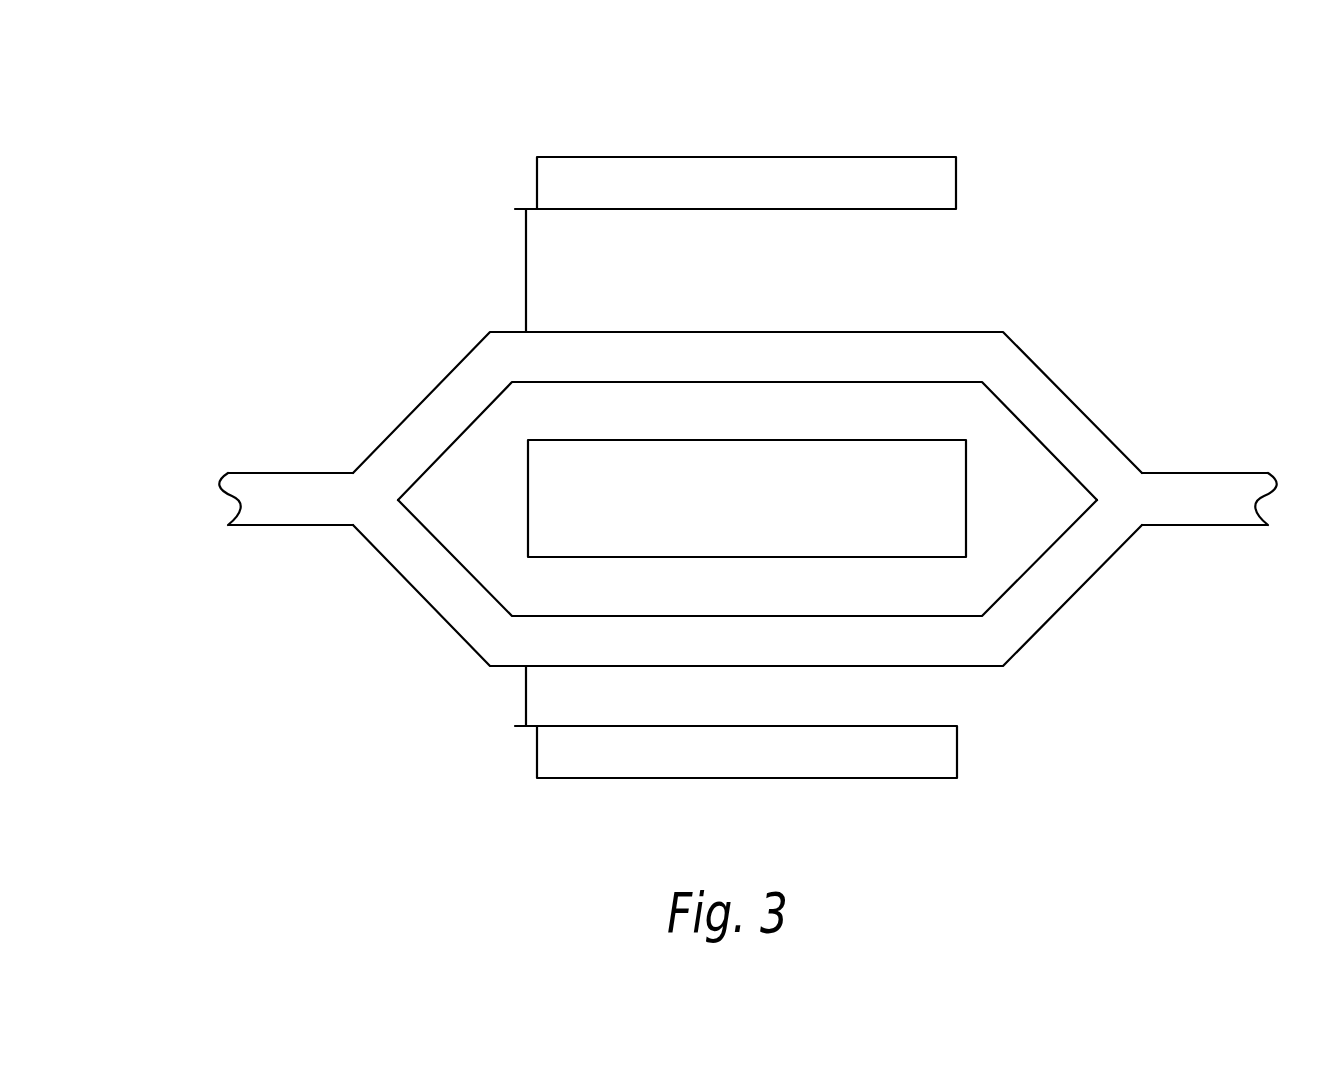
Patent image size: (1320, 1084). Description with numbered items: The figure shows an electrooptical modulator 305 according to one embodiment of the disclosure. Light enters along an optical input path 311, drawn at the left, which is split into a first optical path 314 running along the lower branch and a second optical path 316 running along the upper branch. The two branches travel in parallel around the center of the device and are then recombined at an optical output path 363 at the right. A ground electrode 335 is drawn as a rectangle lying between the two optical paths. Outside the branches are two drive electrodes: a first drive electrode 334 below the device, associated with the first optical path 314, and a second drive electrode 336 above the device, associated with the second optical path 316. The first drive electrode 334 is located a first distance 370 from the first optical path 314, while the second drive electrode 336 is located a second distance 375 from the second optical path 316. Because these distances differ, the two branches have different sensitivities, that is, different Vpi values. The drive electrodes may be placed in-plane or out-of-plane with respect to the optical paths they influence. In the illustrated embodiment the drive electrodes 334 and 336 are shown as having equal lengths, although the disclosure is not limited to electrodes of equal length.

The modulator 305 is at (186, 99).
The optical input path 311 is at (293, 473).
The first optical path 314 is at (423, 593).
The second optical path 316 is at (418, 410).
The first drive electrode 334 is at (957, 752).
The ground electrode 335 is at (745, 440).
The second drive electrode 336 is at (956, 183).
The optical output path 363 is at (1207, 473).
The first distance 370 is at (526, 694).
The second distance 375 is at (526, 270).